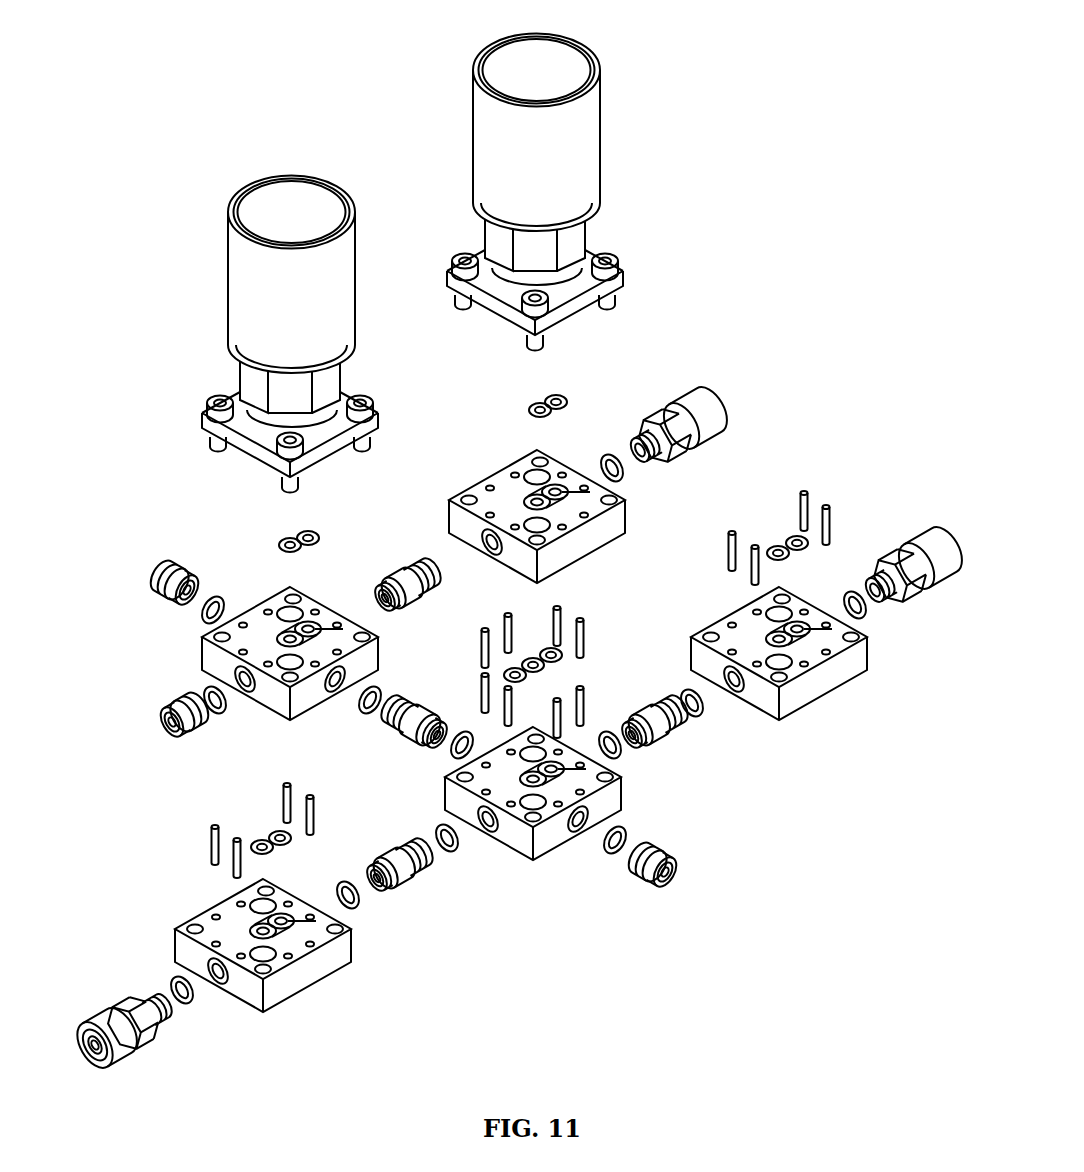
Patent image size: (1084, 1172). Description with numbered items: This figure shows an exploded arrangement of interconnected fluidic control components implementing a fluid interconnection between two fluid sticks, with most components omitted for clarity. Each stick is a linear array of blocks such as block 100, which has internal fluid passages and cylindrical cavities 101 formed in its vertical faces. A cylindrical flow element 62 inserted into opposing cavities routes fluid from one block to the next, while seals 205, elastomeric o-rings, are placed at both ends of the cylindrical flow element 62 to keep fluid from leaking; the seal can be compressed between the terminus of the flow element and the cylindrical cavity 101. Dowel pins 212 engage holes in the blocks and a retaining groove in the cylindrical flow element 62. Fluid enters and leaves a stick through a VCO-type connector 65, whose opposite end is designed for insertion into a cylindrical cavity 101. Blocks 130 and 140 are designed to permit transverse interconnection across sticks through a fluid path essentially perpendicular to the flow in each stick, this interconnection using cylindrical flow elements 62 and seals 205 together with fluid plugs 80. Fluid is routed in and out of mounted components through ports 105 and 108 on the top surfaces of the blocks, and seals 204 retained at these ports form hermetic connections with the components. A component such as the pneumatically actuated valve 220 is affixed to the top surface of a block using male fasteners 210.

The cylindrical flow element 62 is at (405, 580).
The VCO-type connector 65 is at (125, 1010).
The fluid plug 80 is at (160, 594).
The block 100 is at (303, 977).
The cylindrical cavity 101 is at (490, 830).
The port 105 is at (318, 623).
The port 108 is at (568, 752).
The block 130 is at (273, 690).
The block 140 is at (523, 838).
The seal 204 is at (280, 540).
The seal 205 is at (438, 830).
The male fastener 210 is at (212, 399).
The dowel pin 212 is at (207, 845).
The pneumatically actuated valve 220 is at (252, 186).